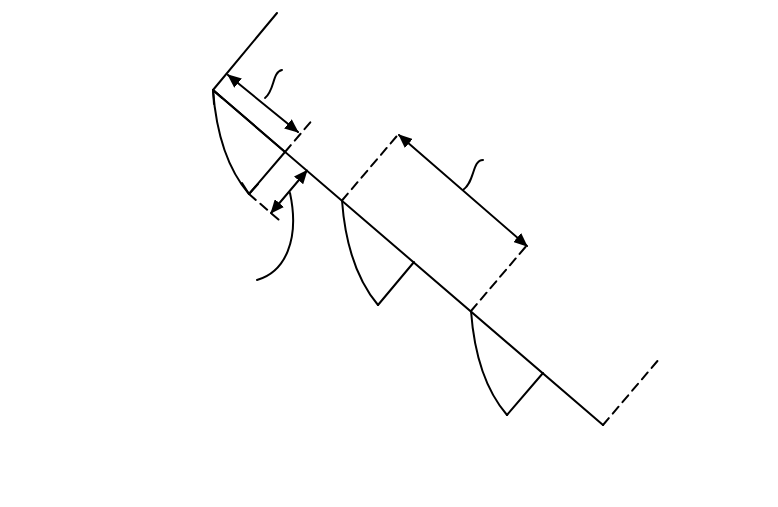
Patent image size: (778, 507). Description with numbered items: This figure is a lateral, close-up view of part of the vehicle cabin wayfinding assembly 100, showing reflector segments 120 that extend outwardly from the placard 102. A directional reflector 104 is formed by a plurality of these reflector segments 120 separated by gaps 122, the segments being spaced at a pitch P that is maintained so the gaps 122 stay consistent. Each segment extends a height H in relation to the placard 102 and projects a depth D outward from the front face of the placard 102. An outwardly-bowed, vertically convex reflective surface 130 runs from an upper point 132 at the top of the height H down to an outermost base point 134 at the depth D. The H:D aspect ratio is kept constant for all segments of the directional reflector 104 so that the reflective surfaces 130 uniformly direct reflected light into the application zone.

The vehicle cabin wayfinding assembly 100 is at (136, 14).
The placard 102 is at (277, 13).
The directional reflector 104 is at (178, 125).
The reflector segment 120 is at (229, 102).
The gap 122 is at (321, 195).
The reflective surface 130 is at (220, 140).
The upper point 132 is at (212, 90).
The outermost base point 134 is at (248, 200).